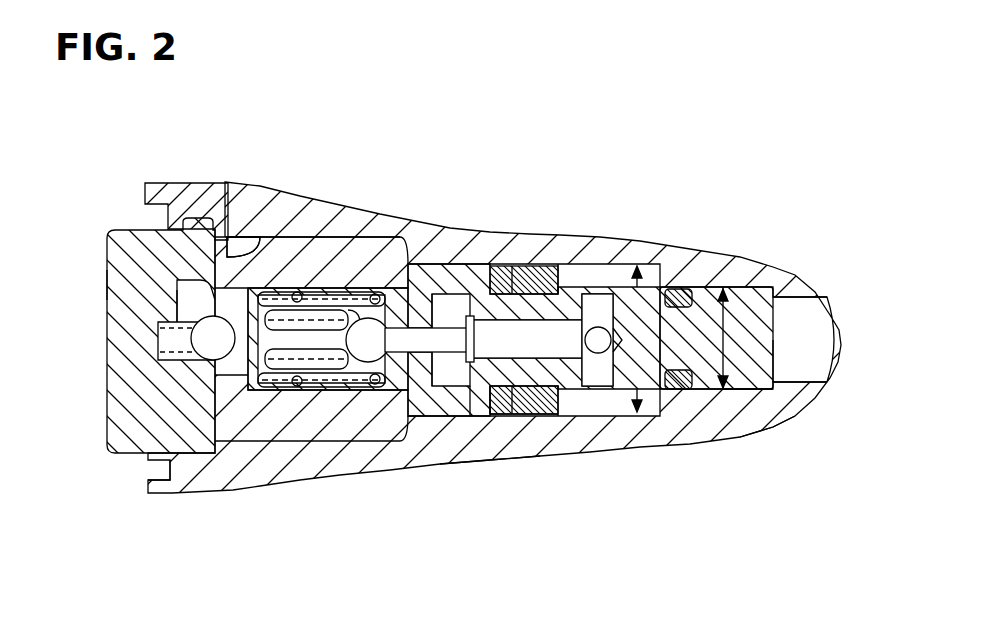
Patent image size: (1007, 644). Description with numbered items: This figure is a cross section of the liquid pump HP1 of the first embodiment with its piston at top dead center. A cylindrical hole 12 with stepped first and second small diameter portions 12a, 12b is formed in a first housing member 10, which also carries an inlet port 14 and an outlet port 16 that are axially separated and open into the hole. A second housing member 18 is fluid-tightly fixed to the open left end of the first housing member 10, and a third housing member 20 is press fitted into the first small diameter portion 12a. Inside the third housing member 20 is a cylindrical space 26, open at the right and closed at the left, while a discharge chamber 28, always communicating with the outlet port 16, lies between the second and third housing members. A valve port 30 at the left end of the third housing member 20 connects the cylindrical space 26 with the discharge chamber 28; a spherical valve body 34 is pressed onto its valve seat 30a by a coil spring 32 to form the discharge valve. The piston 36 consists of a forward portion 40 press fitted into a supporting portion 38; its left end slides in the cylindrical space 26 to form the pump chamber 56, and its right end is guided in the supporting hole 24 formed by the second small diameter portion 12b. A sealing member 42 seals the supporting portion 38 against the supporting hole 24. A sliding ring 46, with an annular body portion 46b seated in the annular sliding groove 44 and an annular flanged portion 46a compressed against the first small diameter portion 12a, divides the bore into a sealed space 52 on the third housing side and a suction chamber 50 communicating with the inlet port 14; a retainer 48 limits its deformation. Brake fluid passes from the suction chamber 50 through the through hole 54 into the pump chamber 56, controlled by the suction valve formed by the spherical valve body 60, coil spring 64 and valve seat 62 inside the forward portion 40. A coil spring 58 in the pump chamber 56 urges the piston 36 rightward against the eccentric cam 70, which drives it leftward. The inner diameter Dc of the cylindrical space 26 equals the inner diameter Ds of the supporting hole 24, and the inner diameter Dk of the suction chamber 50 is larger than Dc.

The first housing member 10 is at (162, 485).
The cylindrical hole 12 is at (228, 492).
The first small diameter portion 12a is at (598, 425).
The second small diameter portion 12b is at (765, 440).
The inlet port 14 is at (647, 262).
The outlet port 16 is at (237, 182).
The second housing member 18 is at (140, 232).
The third housing member 20 is at (318, 240).
The supporting hole 24 is at (757, 413).
The cylindrical space 26 is at (330, 402).
The discharge chamber 28 is at (215, 232).
The valve port 30 is at (108, 285).
The valve seat 30a is at (156, 353).
The coil spring 32 is at (195, 382).
The valve body 34 is at (120, 322).
The piston 36 is at (615, 400).
The supporting portion 38 is at (748, 262).
The forward portion 40 is at (415, 262).
The sealing member 42 is at (680, 392).
The annular sliding groove 44 is at (497, 262).
The sliding ring 46 is at (532, 414).
The annular flanged portion 46a is at (556, 266).
The annular body portion 46b is at (518, 266).
The retainer 48 is at (498, 416).
The suction chamber 50 is at (602, 265).
The space 52 is at (481, 420).
The through hole 54 is at (594, 400).
The pump chamber 56 is at (298, 292).
The coil spring 58 is at (318, 398).
The valve body 60 is at (422, 398).
The valve seat 62 is at (366, 400).
The coil spring 64 is at (372, 294).
The eccentric cam 70 is at (807, 302).
The inner diameter of the cylindrical space Dc is at (452, 240).
The inner diameter of the suction chamber Dk is at (627, 240).
The inner diameter of the supporting hole Ds is at (723, 343).
The liquid pump HP1 is at (604, 86).